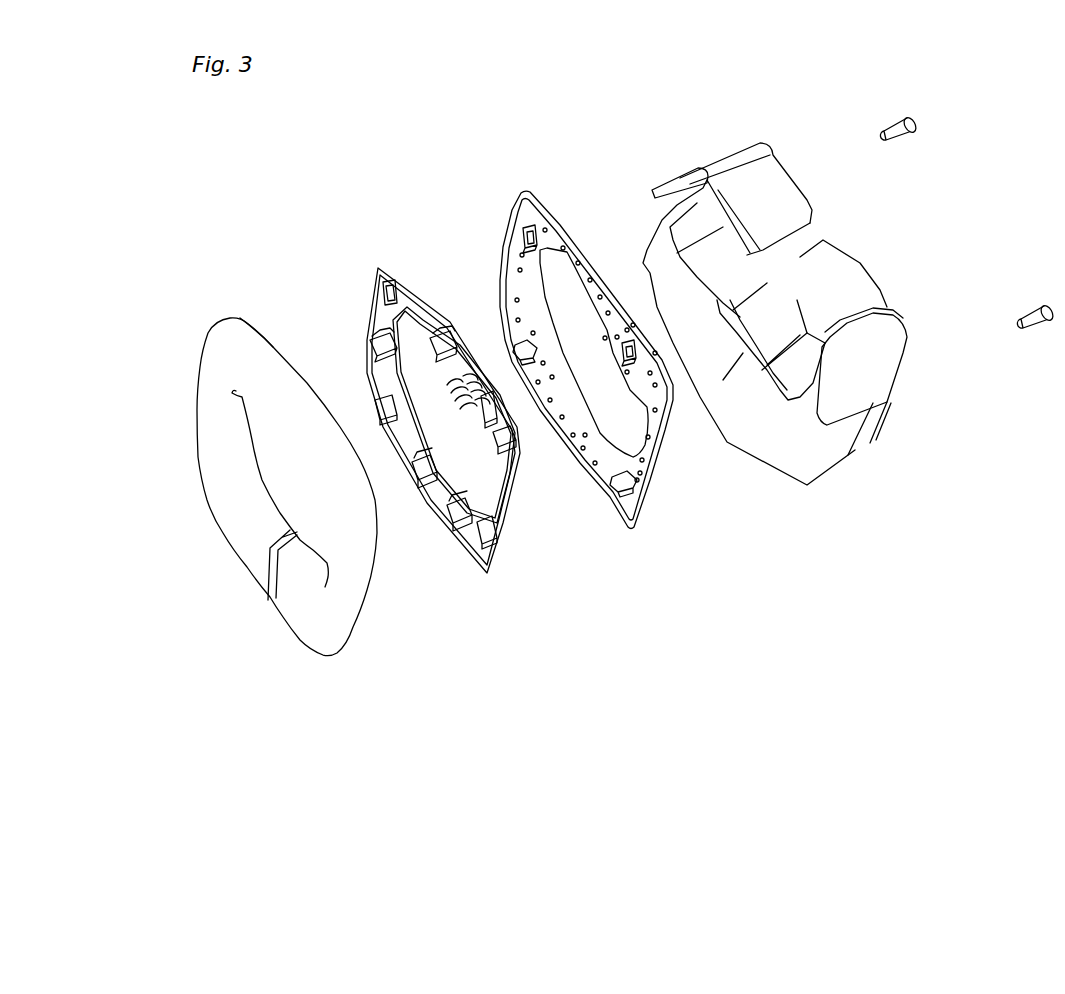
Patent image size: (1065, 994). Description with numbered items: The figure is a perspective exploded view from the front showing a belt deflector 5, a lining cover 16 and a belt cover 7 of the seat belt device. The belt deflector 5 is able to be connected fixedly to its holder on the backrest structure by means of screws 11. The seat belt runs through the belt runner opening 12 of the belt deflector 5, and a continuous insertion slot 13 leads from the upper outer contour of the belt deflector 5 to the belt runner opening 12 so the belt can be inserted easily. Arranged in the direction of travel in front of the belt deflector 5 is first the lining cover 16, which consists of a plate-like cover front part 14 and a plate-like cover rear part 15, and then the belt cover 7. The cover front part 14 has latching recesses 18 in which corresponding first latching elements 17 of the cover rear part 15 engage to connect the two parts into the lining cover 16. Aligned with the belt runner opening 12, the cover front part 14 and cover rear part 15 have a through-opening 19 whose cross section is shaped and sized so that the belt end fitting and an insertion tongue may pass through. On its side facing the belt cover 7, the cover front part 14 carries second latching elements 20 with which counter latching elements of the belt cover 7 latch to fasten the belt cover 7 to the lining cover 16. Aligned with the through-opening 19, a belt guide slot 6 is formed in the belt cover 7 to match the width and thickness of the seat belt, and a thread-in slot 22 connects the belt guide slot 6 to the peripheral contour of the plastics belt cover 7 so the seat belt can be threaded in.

The belt deflector 5 is at (880, 383).
The belt guide slot 6 is at (255, 467).
The belt cover 7 is at (232, 367).
The screws 11 is at (918, 133).
The belt runner opening 12 is at (715, 250).
The insertion slot 13 is at (808, 237).
The cover front part 14 is at (360, 300).
The cover rear part 15 is at (500, 233).
The lining cover 16 is at (643, 583).
The first latching elements 17 is at (530, 237).
The latching recesses 18 is at (378, 405).
The through-opening 19 is at (460, 447).
The second latching elements 20 is at (370, 345).
The thread-in slot 22 is at (290, 535).